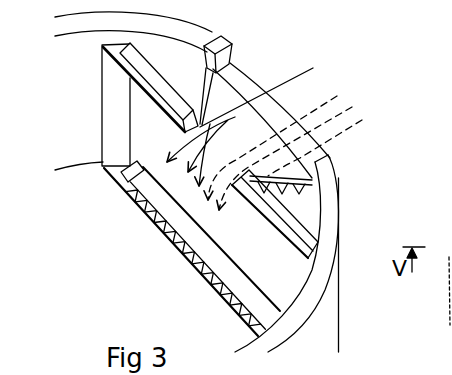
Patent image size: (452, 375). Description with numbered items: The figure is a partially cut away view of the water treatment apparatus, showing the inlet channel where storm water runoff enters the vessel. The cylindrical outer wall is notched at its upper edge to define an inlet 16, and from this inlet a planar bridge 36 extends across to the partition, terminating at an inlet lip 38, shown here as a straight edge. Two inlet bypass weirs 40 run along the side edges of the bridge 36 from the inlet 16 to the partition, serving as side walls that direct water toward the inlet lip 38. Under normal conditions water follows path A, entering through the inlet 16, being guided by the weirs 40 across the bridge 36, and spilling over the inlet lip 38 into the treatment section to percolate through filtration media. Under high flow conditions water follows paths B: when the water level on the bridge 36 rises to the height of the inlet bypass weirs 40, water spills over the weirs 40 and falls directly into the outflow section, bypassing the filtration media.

The inlet 16 is at (250, 82).
The planar bridge 36 is at (298, 154).
The inlet lip 38 is at (127, 178).
The inlet bypass weirs 40 is at (203, 112).
The path A is at (254, 116).
The paths B is at (283, 146).